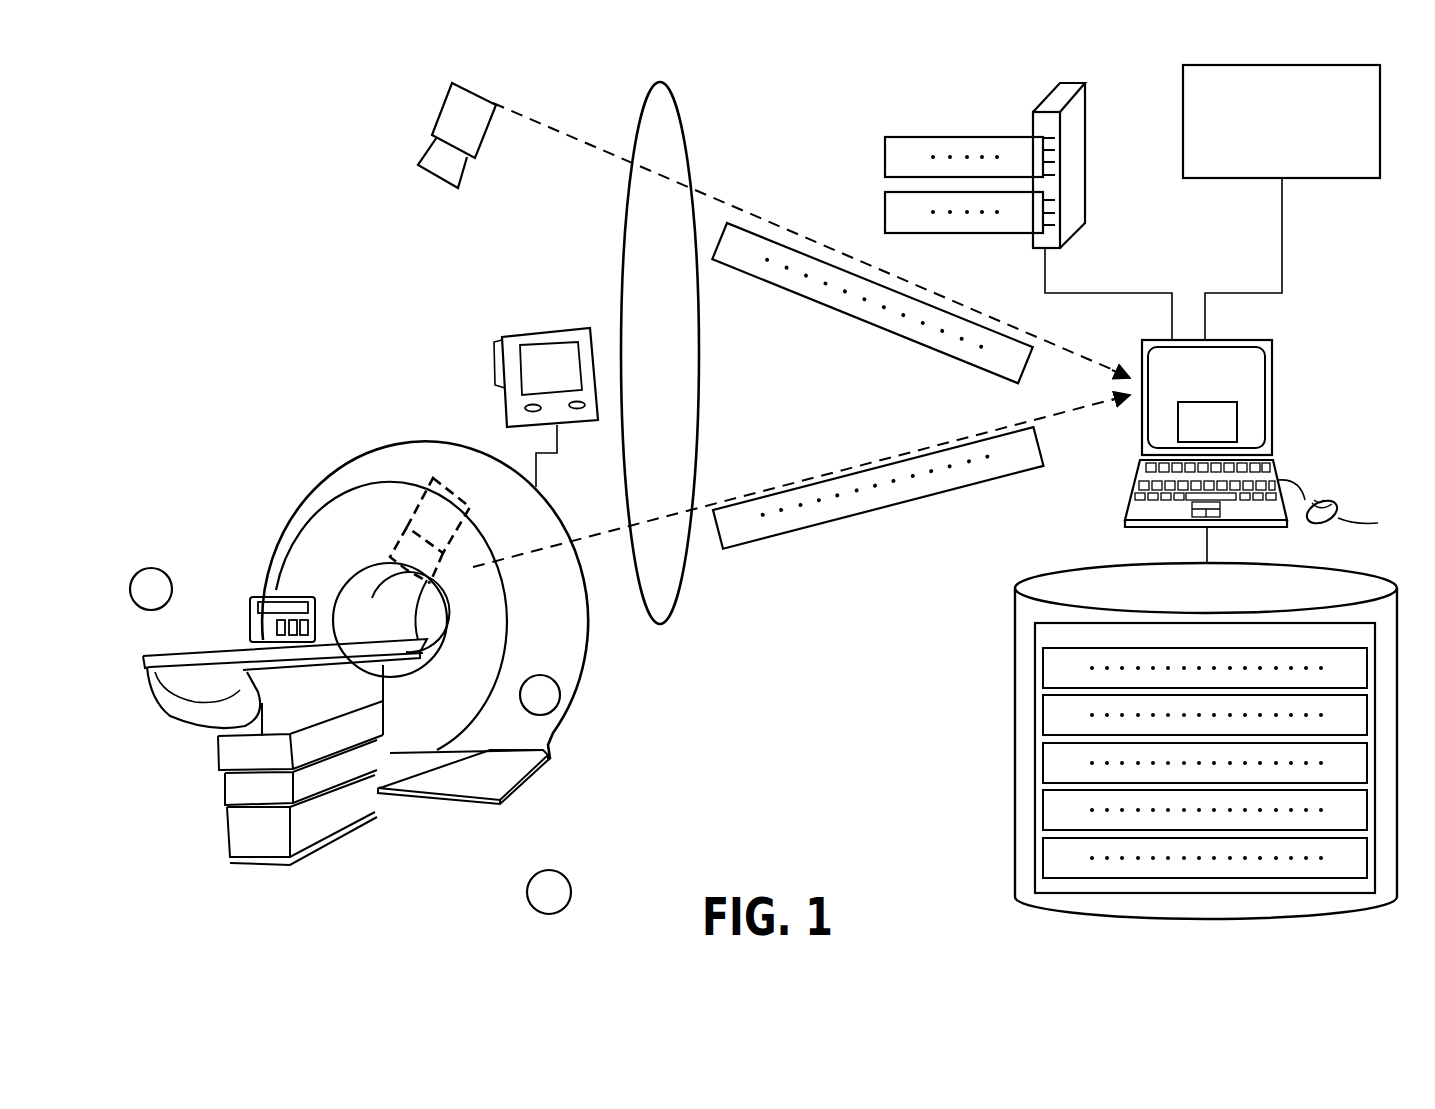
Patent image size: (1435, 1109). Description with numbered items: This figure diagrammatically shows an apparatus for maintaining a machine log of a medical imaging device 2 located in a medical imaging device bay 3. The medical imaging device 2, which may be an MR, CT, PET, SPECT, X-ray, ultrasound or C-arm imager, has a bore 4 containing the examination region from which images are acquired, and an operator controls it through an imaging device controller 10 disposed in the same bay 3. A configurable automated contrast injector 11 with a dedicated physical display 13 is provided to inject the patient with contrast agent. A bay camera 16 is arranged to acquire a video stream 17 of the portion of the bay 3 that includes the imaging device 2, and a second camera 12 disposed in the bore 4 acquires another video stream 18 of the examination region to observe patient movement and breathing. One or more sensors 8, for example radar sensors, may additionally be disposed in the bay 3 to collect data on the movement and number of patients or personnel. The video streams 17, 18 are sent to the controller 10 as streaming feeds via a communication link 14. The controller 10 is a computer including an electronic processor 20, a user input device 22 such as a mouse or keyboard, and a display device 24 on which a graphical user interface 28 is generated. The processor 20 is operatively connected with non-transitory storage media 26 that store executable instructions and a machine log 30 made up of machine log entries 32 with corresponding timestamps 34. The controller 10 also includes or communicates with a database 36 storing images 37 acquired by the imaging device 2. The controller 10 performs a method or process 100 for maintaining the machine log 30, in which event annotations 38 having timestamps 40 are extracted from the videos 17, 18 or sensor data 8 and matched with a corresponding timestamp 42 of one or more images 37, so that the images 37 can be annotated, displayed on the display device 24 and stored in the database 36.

The medical imaging device 2 is at (276, 515).
The medical imaging device bay 3 is at (412, 840).
The bore 4 is at (364, 584).
The sensors 8 is at (151, 568).
The imaging device controller 10 is at (1280, 351).
The contrast injector 11 is at (500, 323).
The second camera 12 is at (419, 471).
The display 13 is at (566, 380).
The communication link 14 is at (680, 117).
The camera 16 is at (432, 116).
The video stream 17 is at (560, 148).
The video stream 18 is at (782, 483).
The electronic processor 20 is at (1137, 482).
The user input device 22 is at (1348, 511).
The display device 24 is at (1190, 382).
The non-transitory storage media 26 is at (1012, 598).
The graphical user interface 28 is at (1190, 434).
The machine log 30 is at (1037, 638).
The machine log entries 32 is at (1089, 682).
The timestamps 34 is at (1363, 682).
The database 36 is at (1087, 147).
The images 37 is at (932, 170).
The event annotations 38 is at (877, 386).
The timestamps 40 is at (1006, 404).
The timestamp 42 is at (1040, 170).
The method or process 100 is at (1256, 163).